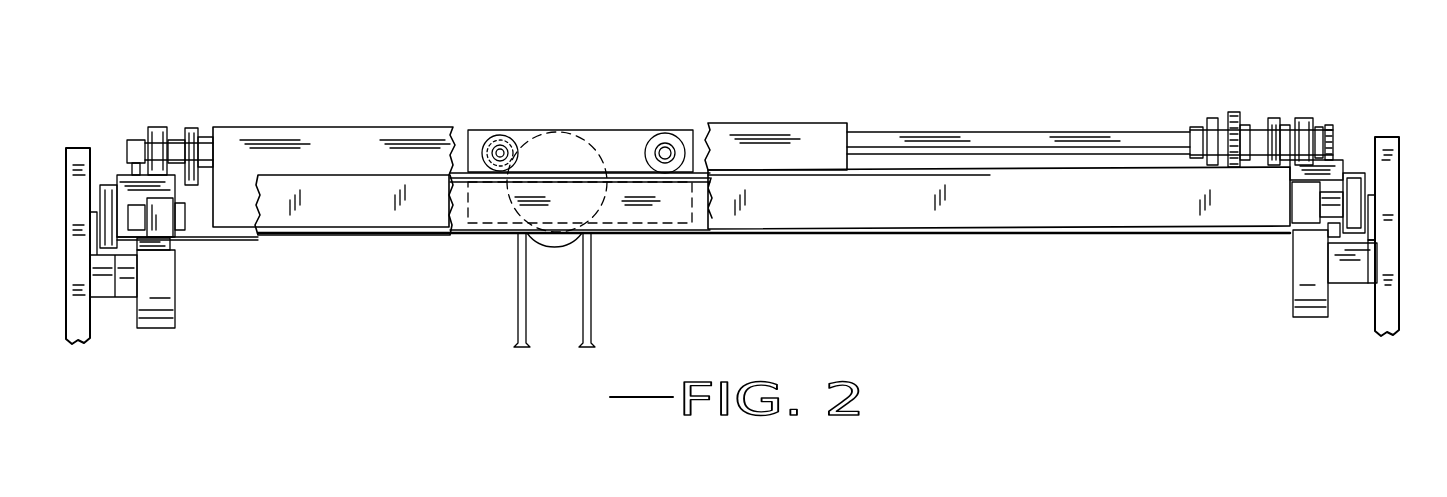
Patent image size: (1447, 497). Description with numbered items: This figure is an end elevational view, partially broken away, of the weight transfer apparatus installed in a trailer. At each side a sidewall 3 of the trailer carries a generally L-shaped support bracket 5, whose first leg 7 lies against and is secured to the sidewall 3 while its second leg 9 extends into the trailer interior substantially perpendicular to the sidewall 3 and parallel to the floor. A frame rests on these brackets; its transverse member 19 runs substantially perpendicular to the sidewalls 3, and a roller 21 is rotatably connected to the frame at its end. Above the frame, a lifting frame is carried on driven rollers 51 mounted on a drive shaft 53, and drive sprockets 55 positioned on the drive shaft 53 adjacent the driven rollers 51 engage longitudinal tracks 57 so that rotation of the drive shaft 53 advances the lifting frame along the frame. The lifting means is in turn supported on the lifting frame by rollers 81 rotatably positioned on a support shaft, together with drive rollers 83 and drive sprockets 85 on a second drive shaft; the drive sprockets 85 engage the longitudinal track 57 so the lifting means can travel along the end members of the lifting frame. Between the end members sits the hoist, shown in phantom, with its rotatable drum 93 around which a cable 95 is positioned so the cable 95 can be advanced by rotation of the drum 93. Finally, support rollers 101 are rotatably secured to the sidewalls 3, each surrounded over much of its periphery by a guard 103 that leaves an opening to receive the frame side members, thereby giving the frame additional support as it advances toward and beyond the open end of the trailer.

The sidewall 3 is at (1399, 201).
The support bracket 5 is at (1388, 272).
The first leg 7 is at (1377, 242).
The second leg 9 is at (1362, 280).
The transverse member 19 is at (916, 203).
The roller 21 is at (1352, 173).
The driven roller 51 is at (1300, 118).
The drive shaft 53 is at (1023, 133).
The drive sprocket 55 is at (1328, 120).
The longitudinal track 57 is at (1343, 172).
The roller 81 is at (690, 130).
The drive roller 83 is at (510, 130).
The drive sprocket 85 is at (490, 135).
The rotatable drum 93 is at (592, 158).
The cable 95 is at (517, 297).
The support roller 101 is at (1290, 228).
The guard 103 is at (1295, 280).